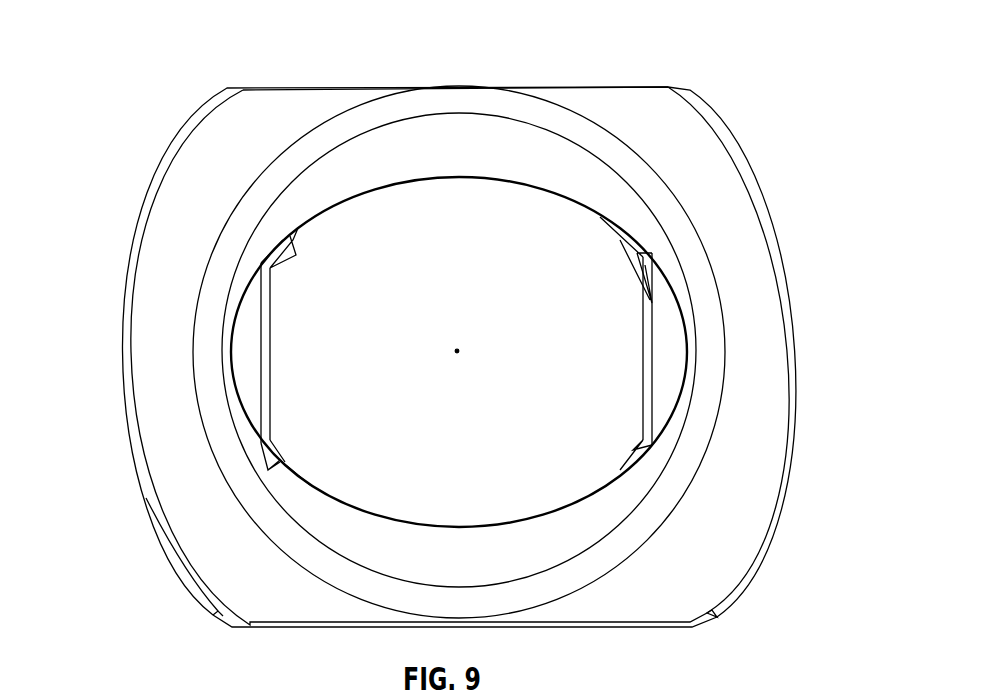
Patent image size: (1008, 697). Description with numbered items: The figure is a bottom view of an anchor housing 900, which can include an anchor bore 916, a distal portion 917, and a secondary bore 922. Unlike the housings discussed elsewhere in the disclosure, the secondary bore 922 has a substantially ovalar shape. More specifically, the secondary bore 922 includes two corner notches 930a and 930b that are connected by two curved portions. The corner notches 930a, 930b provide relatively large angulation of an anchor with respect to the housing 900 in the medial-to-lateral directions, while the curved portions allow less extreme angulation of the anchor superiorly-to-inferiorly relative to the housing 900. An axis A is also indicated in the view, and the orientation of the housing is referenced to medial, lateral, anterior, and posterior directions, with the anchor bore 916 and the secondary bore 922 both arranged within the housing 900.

The anchor housing 900 is at (465, 313).
The distal portion 917 is at (806, 123).
The secondary bore 922 is at (478, 180).
The corner notch 930a is at (378, 183).
The corner notch 930b is at (248, 347).
The anchor bore 916 is at (282, 330).
The axis A is at (457, 349).